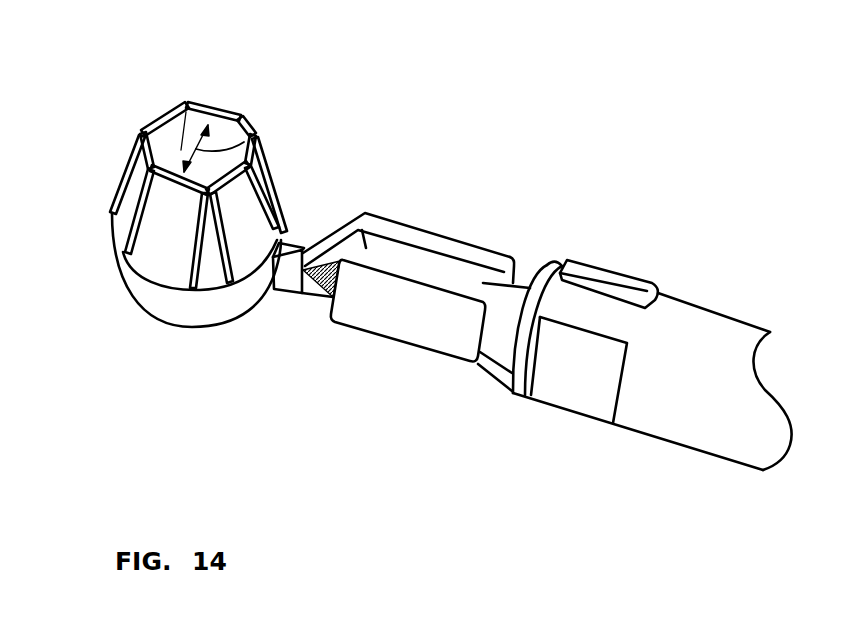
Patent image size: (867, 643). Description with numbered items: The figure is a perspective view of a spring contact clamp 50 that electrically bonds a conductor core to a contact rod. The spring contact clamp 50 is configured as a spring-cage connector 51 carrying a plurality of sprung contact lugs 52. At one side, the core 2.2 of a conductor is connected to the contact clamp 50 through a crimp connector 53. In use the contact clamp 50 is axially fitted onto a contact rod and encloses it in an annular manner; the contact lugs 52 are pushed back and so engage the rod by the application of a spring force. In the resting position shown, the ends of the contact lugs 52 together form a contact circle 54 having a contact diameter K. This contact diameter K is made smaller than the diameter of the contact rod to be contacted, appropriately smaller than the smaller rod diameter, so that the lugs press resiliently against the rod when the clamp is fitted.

The spring contact clamp 50 is at (186, 208).
The spring-cage connector 51 is at (217, 315).
The sprung contact lugs 52 is at (214, 111).
The contact circle 54 is at (173, 115).
The contact diameter K is at (244, 142).
The crimp connector 53 is at (515, 248).
The core 2.2 is at (688, 335).